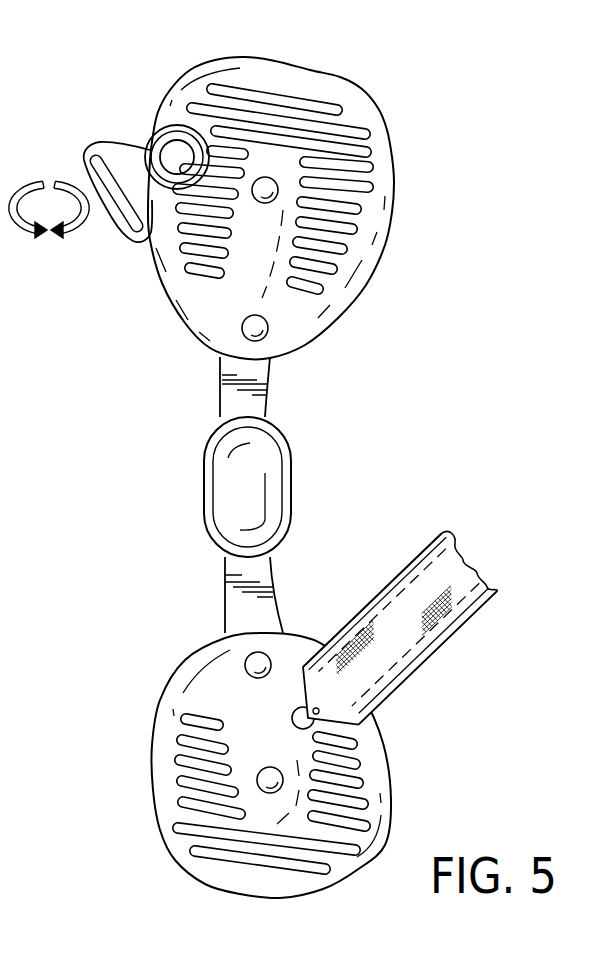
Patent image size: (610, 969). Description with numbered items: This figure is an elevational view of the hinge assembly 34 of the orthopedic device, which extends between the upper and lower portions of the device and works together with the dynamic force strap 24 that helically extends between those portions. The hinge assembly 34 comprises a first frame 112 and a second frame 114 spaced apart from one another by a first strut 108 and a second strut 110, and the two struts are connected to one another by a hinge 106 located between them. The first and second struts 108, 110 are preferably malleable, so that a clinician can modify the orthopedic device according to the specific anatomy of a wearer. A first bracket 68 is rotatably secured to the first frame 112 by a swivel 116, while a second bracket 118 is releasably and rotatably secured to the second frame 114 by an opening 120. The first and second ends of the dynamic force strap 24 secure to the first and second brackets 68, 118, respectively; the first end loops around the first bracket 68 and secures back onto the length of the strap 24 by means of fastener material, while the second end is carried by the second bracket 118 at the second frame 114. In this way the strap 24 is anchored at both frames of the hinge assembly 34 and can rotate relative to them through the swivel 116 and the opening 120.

The dynamic force strap 24 is at (452, 575).
The hinge assembly 34 is at (292, 458).
The first bracket 68 is at (117, 218).
The hinge 106 is at (204, 483).
The first strut 108 is at (272, 378).
The second strut 110 is at (282, 582).
The first frame 112 is at (394, 226).
The second frame 114 is at (154, 780).
The swivel 116 is at (170, 152).
The second bracket 118 is at (360, 727).
The opening 120 is at (298, 718).